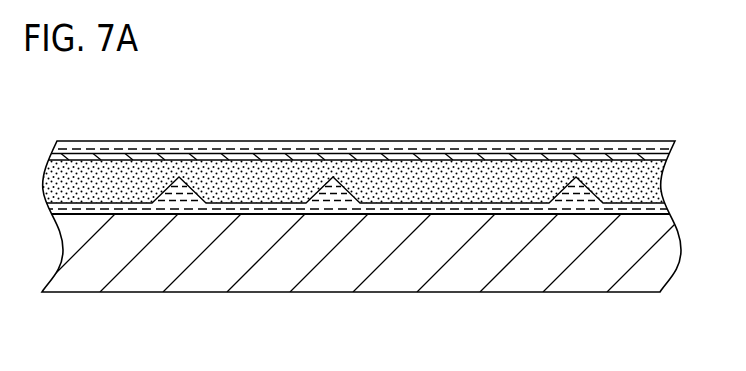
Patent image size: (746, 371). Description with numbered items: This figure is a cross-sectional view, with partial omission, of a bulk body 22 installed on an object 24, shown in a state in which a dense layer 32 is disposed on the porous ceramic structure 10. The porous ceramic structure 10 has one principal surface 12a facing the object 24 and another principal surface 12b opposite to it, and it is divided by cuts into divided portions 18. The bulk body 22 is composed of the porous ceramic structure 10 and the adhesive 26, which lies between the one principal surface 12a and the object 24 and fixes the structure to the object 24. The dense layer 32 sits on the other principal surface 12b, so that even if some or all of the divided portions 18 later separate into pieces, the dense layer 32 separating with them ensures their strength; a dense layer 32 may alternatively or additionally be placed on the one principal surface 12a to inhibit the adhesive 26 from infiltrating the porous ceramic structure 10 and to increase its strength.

The porous ceramic structure 10 is at (629, 157).
The one principal surface 12a is at (452, 204).
The other principal surface 12b is at (340, 158).
The divided portion 18 is at (213, 172).
The bulk body 22 is at (579, 140).
The object 24 is at (345, 268).
The adhesive 26 is at (128, 153).
The dense layer 32 is at (289, 153).